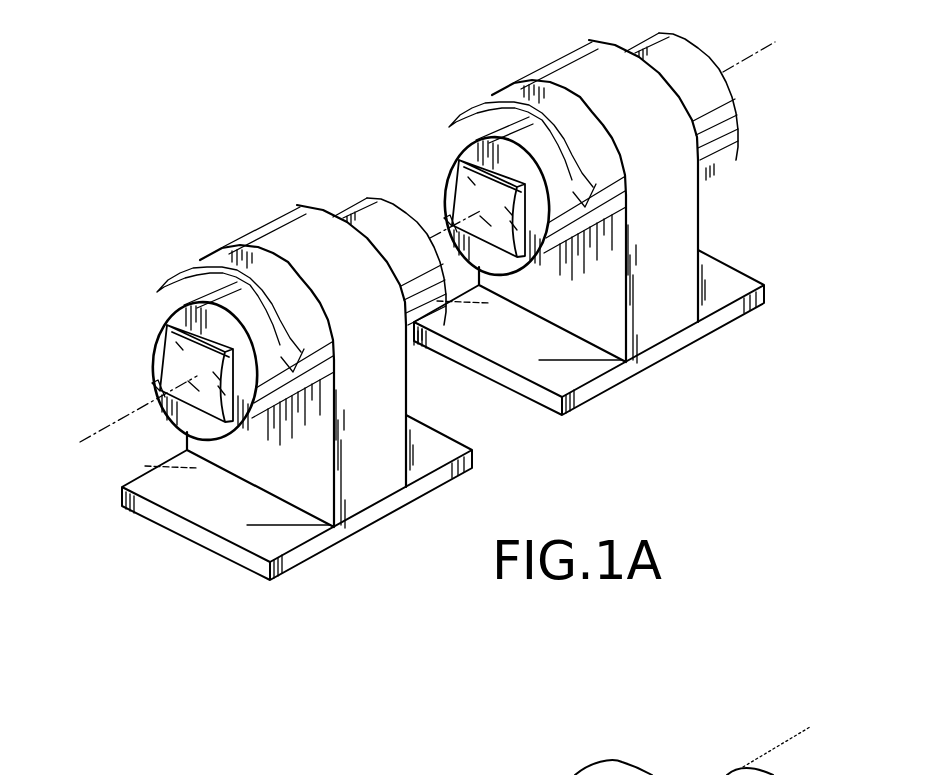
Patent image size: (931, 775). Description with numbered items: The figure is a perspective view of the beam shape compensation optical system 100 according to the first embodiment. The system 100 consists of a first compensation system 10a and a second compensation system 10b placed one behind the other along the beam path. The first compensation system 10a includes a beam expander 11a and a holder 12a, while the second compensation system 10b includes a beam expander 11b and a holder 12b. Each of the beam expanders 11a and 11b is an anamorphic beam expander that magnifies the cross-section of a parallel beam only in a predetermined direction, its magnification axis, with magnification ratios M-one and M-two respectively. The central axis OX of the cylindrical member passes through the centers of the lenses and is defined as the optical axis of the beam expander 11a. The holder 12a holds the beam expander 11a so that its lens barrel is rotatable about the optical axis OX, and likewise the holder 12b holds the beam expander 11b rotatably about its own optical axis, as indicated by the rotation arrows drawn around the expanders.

The beam shape compensation optical system 100 is at (212, 54).
The first compensation system 10a is at (213, 225).
The second compensation system 10b is at (507, 52).
The beam expander 11a is at (360, 200).
The beam expander 11b is at (719, 107).
The holder 12a is at (424, 446).
The holder 12b is at (719, 278).
The optical axis OX is at (100, 421).